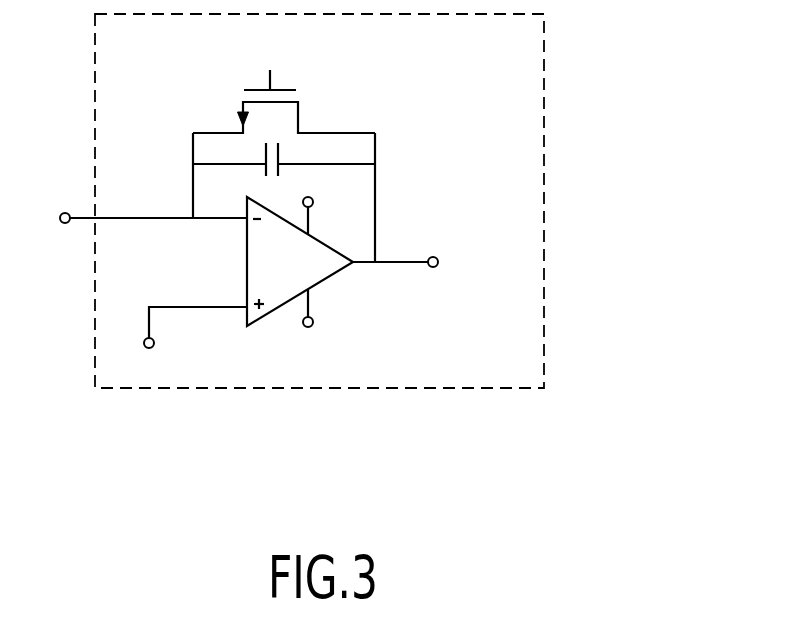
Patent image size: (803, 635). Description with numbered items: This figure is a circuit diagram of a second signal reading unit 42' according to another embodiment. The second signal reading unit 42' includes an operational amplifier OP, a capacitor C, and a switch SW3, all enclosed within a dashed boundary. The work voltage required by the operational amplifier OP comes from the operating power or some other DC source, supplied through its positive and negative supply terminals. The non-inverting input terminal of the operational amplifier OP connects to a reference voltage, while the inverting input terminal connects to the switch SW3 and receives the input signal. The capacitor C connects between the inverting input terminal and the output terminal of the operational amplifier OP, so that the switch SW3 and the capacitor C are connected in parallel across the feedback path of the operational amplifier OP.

The second signal reading unit 42' is at (351, 201).
The switch SW3 is at (284, 86).
The capacitor C is at (284, 143).
The operational amplifier OP is at (302, 266).